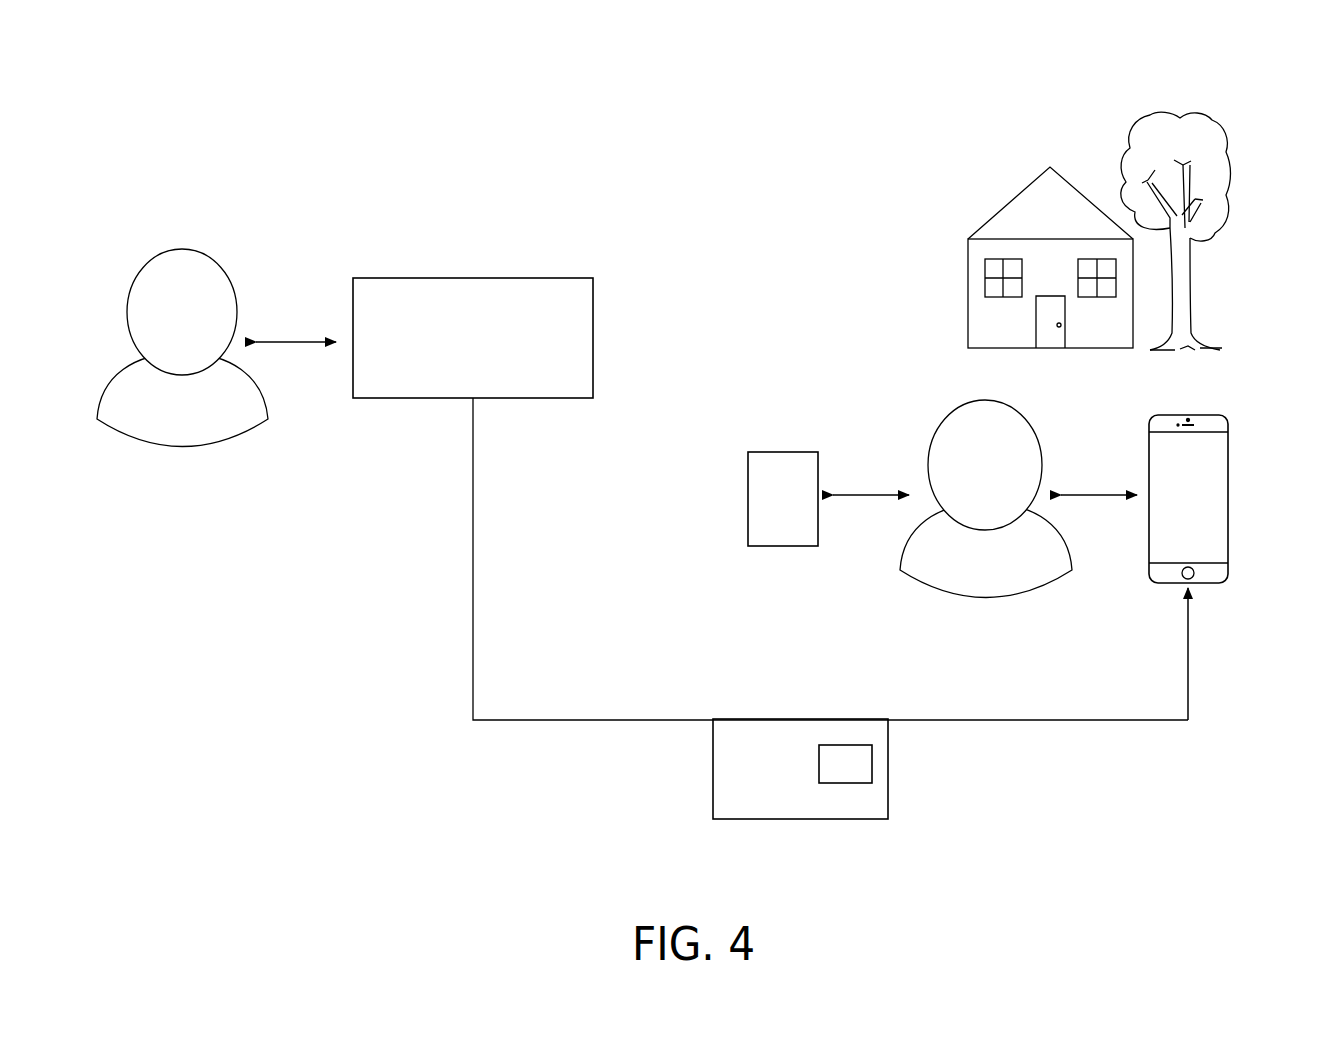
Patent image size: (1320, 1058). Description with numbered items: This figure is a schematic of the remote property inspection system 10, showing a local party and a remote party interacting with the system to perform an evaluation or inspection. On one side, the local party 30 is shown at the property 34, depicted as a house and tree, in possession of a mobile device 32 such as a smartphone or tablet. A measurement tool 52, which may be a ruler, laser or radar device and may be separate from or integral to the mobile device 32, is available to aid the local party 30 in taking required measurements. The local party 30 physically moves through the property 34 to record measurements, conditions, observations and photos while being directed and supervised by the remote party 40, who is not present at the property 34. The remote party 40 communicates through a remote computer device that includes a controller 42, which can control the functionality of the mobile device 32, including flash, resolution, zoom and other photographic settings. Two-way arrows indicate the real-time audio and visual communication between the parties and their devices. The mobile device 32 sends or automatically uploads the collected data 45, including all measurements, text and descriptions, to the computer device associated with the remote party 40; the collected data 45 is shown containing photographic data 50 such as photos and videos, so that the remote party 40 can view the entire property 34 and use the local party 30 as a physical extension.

The system 10 is at (313, 128).
The local party 30 is at (988, 598).
The mobile device 32 is at (1228, 497).
The property 34 is at (1232, 105).
The remote party 40 is at (180, 447).
The controller 42 is at (473, 338).
The collected data 45 is at (800, 819).
The photographic data 50 is at (872, 763).
The measurement tool 52 is at (748, 497).